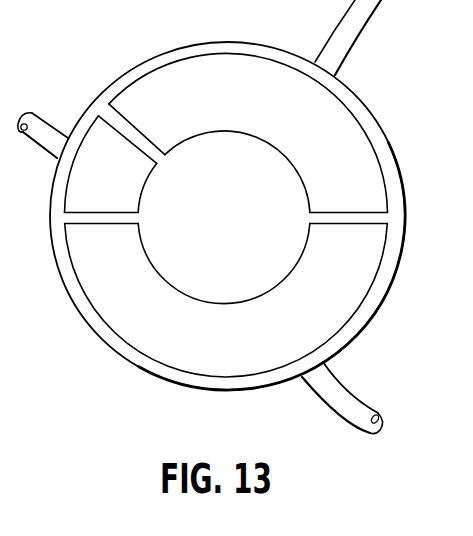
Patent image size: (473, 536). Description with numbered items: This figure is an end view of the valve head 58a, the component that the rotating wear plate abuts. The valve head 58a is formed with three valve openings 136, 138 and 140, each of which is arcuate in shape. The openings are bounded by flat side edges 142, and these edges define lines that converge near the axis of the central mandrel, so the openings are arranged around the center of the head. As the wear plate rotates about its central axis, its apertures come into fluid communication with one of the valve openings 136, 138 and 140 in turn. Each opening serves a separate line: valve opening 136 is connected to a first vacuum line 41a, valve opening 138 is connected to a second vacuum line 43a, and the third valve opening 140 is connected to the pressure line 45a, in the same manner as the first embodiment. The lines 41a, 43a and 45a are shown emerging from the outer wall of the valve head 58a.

The valve opening 136 is at (375, 247).
The valve opening 138 is at (353, 137).
The valve opening 140 is at (134, 197).
The flat side edges 142 is at (143, 135).
The first vacuum line 41a is at (362, 402).
The second vacuum line 43a is at (368, 28).
The pressure line 45a is at (50, 122).
The outer surface of housing 58a is at (380, 308).